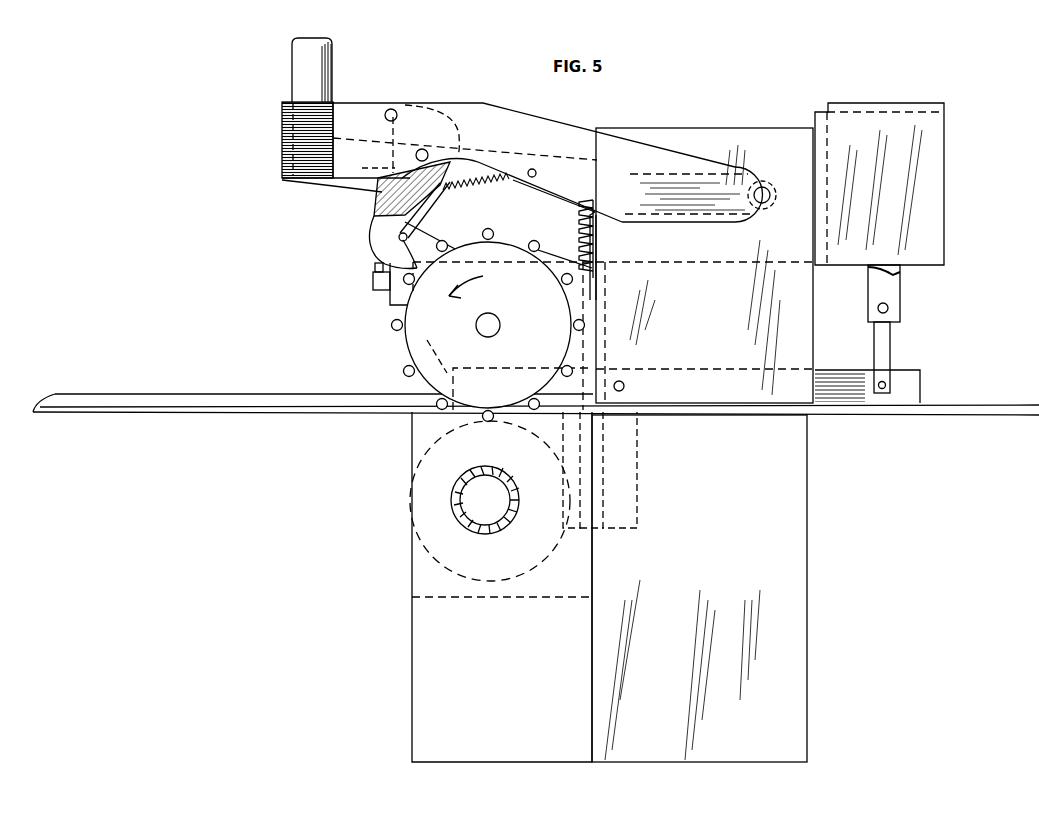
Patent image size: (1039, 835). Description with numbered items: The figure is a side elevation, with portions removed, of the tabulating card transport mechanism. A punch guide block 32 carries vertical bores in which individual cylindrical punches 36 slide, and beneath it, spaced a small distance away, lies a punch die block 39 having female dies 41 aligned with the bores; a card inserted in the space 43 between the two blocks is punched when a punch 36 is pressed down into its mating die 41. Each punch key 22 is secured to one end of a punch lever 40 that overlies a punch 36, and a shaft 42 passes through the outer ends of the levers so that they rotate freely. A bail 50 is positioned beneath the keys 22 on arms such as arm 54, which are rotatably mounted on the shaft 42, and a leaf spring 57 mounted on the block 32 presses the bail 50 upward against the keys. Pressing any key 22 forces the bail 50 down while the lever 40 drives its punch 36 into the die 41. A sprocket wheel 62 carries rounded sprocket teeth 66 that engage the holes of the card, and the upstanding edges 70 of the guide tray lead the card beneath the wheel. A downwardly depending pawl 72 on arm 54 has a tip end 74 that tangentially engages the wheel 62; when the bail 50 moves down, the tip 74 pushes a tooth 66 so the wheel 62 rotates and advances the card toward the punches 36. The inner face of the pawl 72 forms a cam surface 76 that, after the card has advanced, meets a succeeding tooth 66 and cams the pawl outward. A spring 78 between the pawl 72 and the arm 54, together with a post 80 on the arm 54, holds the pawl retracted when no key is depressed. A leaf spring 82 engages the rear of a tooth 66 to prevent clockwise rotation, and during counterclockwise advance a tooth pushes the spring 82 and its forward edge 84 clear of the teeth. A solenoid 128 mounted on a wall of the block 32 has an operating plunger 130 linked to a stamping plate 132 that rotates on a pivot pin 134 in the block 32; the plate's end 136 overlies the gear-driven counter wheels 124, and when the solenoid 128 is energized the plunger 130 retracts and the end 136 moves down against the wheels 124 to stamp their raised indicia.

The punch key 22 is at (300, 63).
The punch guide block 32 is at (787, 321).
The cylindrical punch 36 is at (578, 238).
The punch die block 39 is at (612, 466).
The punch lever 40 is at (489, 148).
The female die 41 is at (593, 497).
The shaft 42 is at (760, 187).
The space 43 is at (600, 413).
The bail 50 is at (288, 142).
The arm 54 is at (552, 128).
The leaf spring 57 is at (340, 185).
The sprocket wheel 62 is at (405, 315).
The sprocket teeth 66 is at (532, 245).
The upstanding edges 70 is at (246, 405).
The pawl 72 is at (372, 208).
The tip end 74 is at (373, 278).
The cam surface 76 is at (372, 230).
The spring 78 is at (480, 194).
The post 80 is at (392, 109).
The leaf spring 82 is at (597, 264).
The forward edge 84 is at (533, 245).
The counter wheels 124 is at (410, 490).
The solenoid 128 is at (928, 150).
The operating plunger 130 is at (890, 302).
The stamping plate 132 is at (910, 384).
The pivot pin 134 is at (621, 380).
The end of stamping plate 136 is at (462, 333).